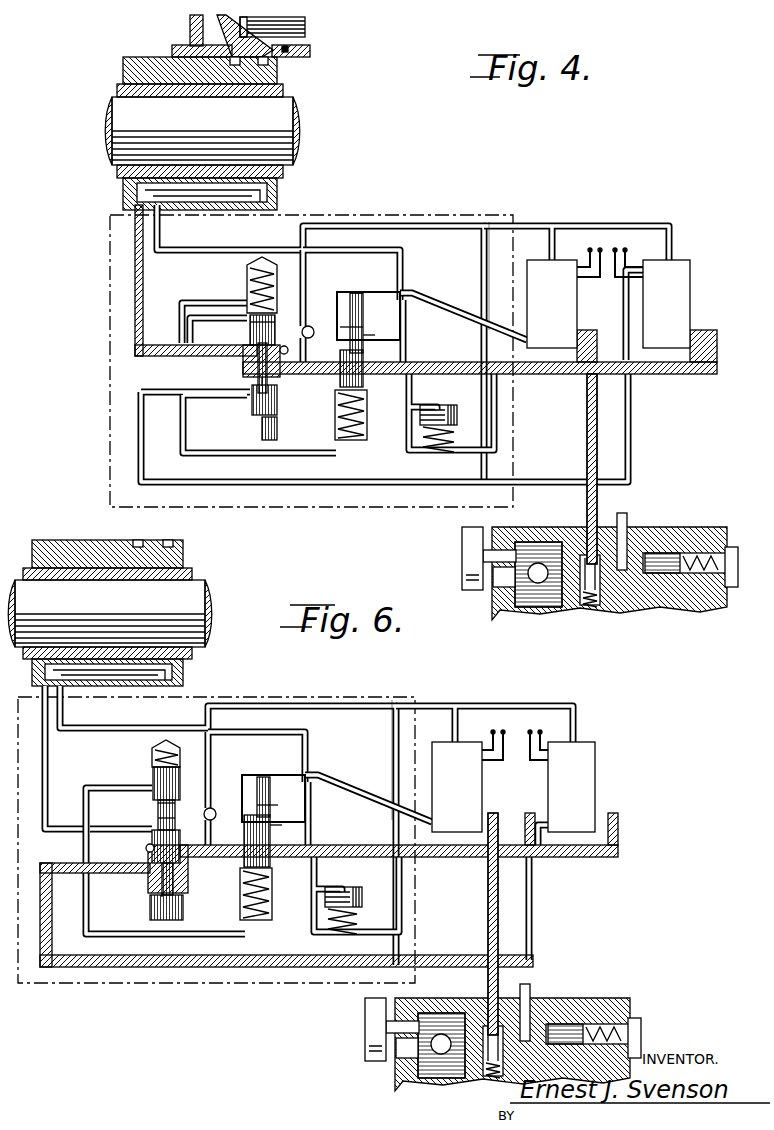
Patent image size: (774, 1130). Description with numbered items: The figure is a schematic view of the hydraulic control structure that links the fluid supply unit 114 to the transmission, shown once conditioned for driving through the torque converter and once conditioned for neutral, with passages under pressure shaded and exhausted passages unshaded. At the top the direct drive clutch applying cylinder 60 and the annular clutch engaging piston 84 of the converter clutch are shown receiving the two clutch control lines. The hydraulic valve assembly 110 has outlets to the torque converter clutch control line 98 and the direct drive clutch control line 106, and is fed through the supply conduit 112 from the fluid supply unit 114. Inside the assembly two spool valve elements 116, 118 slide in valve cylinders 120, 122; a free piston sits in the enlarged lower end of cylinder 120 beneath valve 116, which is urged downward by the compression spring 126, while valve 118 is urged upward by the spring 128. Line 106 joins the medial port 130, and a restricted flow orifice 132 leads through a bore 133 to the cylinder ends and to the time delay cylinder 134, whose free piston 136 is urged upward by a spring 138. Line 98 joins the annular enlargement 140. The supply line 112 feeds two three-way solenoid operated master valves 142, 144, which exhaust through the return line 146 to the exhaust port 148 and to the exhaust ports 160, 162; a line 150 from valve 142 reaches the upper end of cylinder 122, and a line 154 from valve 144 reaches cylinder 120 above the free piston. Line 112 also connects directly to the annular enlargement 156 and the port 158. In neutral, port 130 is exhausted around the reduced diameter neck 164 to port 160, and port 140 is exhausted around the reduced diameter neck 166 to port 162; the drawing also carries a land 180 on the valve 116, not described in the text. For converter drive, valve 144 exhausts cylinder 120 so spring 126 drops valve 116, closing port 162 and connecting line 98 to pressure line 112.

In FIG. 4, the direct drive clutch applying cylinder 60 is at (196, 33).
In FIG. 4, the annular clutch engaging piston 84 is at (300, 43).
In FIG. 4, the torque converter clutch control line 98 is at (143, 272).
In FIG. 6, the torque converter clutch control line 98 is at (50, 750).
In FIG. 4, the direct drive clutch control line 106 is at (200, 251).
In FIG. 6, the direct drive clutch control line 106 is at (105, 728).
In FIG. 4, the hydraulic valve assembly 110 is at (343, 507).
In FIG. 6, the hydraulic valve assembly 110 is at (213, 985).
In FIG. 4, the supply conduit 112 is at (534, 375).
In FIG. 6, the supply conduit 112 is at (448, 858).
In FIG. 4, the fluid supply unit 114 is at (680, 512).
In FIG. 6, the fluid supply unit 114 is at (557, 1007).
In FIG. 4, the spool valve element 116 is at (253, 341).
In FIG. 6, the spool valve element 116 is at (152, 775).
In FIG. 4, the spool valve element 118 is at (366, 322).
In FIG. 6, the spool valve element 118 is at (262, 778).
In FIG. 4, the valve cylinder 120 is at (268, 392).
In FIG. 4, the valve cylinder 122 is at (356, 292).
In FIG. 6, the valve cylinder 122 is at (278, 805).
In FIG. 4, the compression spring 126 is at (247, 287).
In FIG. 4, the spring 128 is at (358, 440).
In FIG. 6, the spring 128 is at (265, 920).
In FIG. 4, the medial port 130 is at (370, 336).
In FIG. 6, the medial port 130 is at (280, 825).
In FIG. 4, the restricted flow orifice 132 is at (403, 357).
In FIG. 6, the restricted flow orifice 132 is at (290, 840).
In FIG. 4, the bore 133 is at (410, 406).
In FIG. 6, the bore 133 is at (316, 888).
In FIG. 4, the time delay cylinder 134 is at (452, 438).
In FIG. 4, the free piston 136 is at (440, 408).
In FIG. 6, the free piston 136 is at (345, 890).
In FIG. 4, the spring 138 is at (428, 452).
In FIG. 4, the annular enlargement 140 is at (289, 344).
In FIG. 6, the annular enlargement 140 is at (158, 832).
In FIG. 4, the solenoid operated master valve 142 is at (563, 311).
In FIG. 6, the solenoid operated master valve 142 is at (468, 793).
In FIG. 4, the solenoid operated master valve 144 is at (674, 348).
In FIG. 6, the solenoid operated master valve 144 is at (578, 795).
In FIG. 4, the return line 146 is at (626, 222).
In FIG. 6, the return line 146 is at (418, 706).
In FIG. 4, the exhaust port 148 is at (308, 326).
In FIG. 6, the exhaust port 148 is at (215, 818).
In FIG. 4, the line 150 is at (456, 285).
In FIG. 6, the line 150 is at (345, 783).
In FIG. 4, the line 154 is at (632, 430).
In FIG. 6, the line 154 is at (535, 905).
In FIG. 4, the annular enlargement 156 is at (381, 386).
In FIG. 4, the port 158 is at (262, 382).
In FIG. 6, the port 158 is at (150, 880).
In FIG. 4, the exhaust port 160 is at (345, 328).
In FIG. 6, the exhaust port 160 is at (270, 815).
In FIG. 4, the exhaust port 162 is at (252, 325).
In FIG. 6, the exhaust port 162 is at (182, 800).
In FIG. 6, the reduced diameter neck 164 is at (240, 815).
In FIG. 6, the reduced diameter neck 166 is at (158, 803).
In FIG. 6, the valve land 180 is at (155, 818).